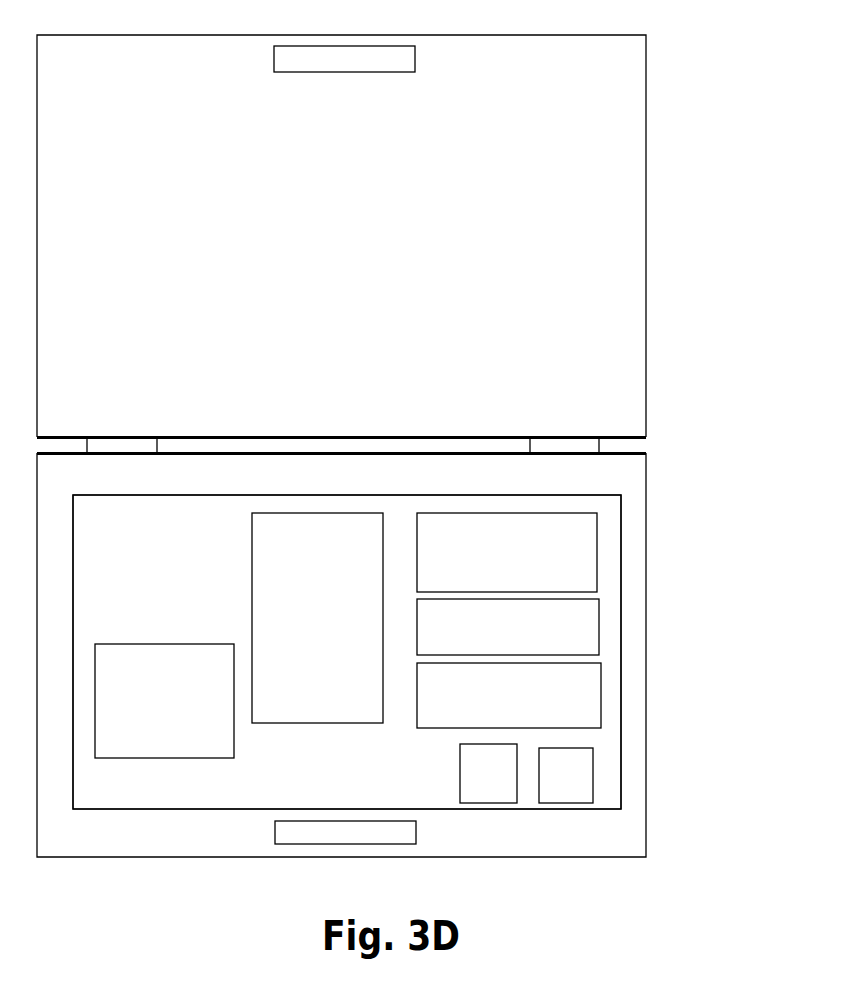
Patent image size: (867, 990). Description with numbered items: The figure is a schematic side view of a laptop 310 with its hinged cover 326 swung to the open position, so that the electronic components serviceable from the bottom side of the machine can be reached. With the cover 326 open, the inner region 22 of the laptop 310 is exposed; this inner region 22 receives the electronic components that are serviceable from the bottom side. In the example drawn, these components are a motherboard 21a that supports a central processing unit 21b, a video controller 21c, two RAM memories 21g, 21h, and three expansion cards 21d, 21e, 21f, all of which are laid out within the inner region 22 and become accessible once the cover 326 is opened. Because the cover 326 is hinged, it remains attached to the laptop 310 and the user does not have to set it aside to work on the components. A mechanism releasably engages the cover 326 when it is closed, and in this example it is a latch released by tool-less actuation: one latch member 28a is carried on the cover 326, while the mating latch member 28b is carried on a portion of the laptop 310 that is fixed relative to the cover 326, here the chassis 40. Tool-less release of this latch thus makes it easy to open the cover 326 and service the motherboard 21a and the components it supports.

The laptop 310 is at (396, 446).
The cover 326 is at (100, 99).
The latch member 28a is at (298, 62).
The latch member 28b is at (277, 829).
The inner region 22 is at (626, 530).
The motherboard 21a is at (130, 532).
The central processing unit 21b is at (144, 672).
The video controller 21c is at (299, 542).
The expansion card 21d is at (463, 541).
The expansion card 21e is at (463, 626).
The expansion card 21f is at (457, 691).
The RAM memory 21g is at (499, 771).
The RAM memory 21h is at (578, 771).
The chassis 40 is at (149, 843).